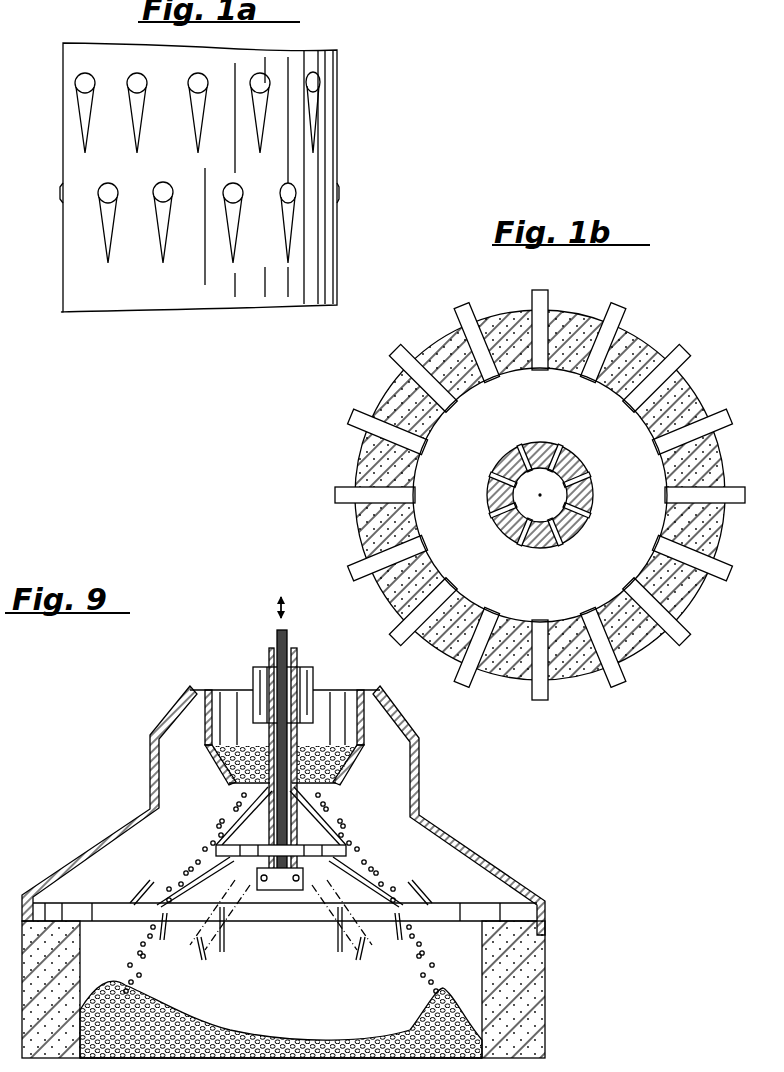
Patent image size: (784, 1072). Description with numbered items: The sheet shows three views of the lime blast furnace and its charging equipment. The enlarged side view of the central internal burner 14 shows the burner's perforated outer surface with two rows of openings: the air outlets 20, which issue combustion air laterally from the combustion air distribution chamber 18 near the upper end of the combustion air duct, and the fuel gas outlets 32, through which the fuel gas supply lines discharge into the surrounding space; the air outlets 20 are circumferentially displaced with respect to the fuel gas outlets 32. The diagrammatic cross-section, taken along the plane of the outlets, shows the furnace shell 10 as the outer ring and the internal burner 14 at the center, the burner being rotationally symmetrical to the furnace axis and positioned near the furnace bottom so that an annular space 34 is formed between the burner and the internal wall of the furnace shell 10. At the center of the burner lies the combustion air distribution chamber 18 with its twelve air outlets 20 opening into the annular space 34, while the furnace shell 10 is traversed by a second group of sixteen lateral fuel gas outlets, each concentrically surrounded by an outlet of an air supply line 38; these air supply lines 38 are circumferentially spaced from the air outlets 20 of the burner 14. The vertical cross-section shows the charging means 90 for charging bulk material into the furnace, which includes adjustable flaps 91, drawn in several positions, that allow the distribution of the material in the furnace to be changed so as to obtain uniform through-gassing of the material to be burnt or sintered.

In FIG. 1B, the furnace shell 10 is at (554, 494).
In FIG. 9, the furnace shell 10 is at (541, 980).
In FIG. 1A, the internal burner 14 is at (340, 273).
In FIG. 1B, the internal burner 14 is at (567, 488).
In FIG. 1B, the combustion air distribution chamber 18 is at (551, 484).
In FIG. 1A, the air outlets 20 is at (258, 84).
In FIG. 1B, the air outlets 20 is at (585, 462).
In FIG. 1A, the fuel gas outlets 32 is at (230, 196).
In FIG. 1B, the annular space 34 is at (457, 518).
In FIG. 1B, the air supply line 38 is at (643, 372).
In FIG. 9, the charging means 90 is at (420, 800).
In FIG. 9, the adjustable flaps 91 is at (187, 881).